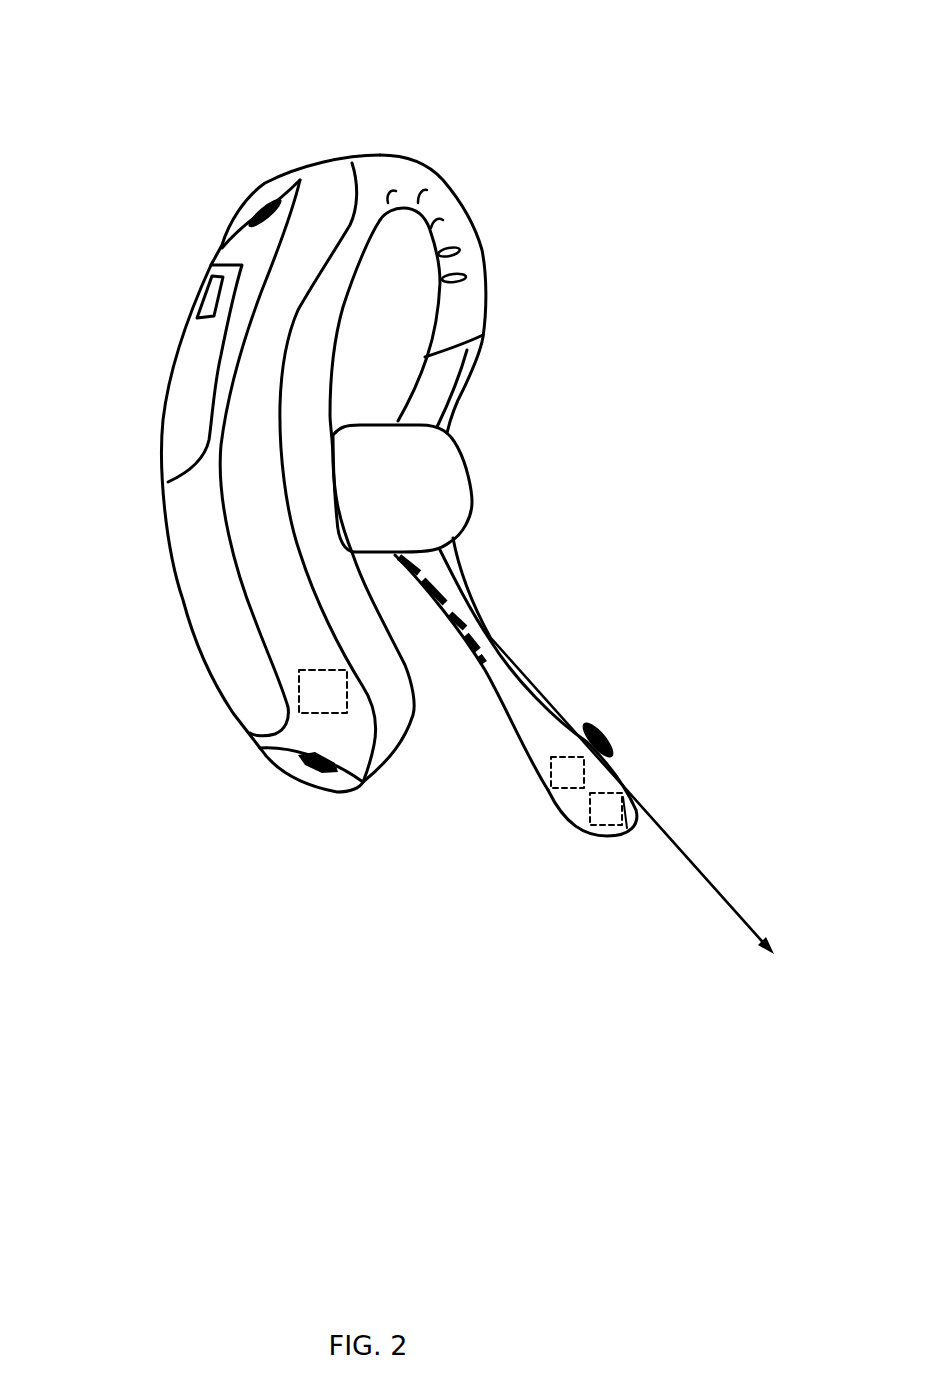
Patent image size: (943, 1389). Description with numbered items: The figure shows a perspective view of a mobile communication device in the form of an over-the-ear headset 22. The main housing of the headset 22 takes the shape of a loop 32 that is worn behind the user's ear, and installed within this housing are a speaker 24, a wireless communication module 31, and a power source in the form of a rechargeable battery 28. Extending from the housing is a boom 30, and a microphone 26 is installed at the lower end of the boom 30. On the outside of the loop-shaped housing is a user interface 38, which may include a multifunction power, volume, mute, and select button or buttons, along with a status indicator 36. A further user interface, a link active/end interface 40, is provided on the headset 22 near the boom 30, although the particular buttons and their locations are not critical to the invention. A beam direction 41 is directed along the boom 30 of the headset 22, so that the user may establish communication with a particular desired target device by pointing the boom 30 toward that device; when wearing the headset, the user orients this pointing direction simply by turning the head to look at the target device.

The over-the-ear headset 22 is at (358, 107).
The speaker 24 is at (402, 488).
The microphone 26 is at (606, 809).
The rechargeable battery 28 is at (323, 691).
The boom 30 is at (513, 643).
The wireless communication module 31 is at (567, 772).
The loop 32 is at (191, 530).
The status indicator 36 is at (207, 297).
The user interface 38 is at (260, 207).
The link active/end interface 40 is at (605, 733).
The beam direction 41 is at (639, 795).